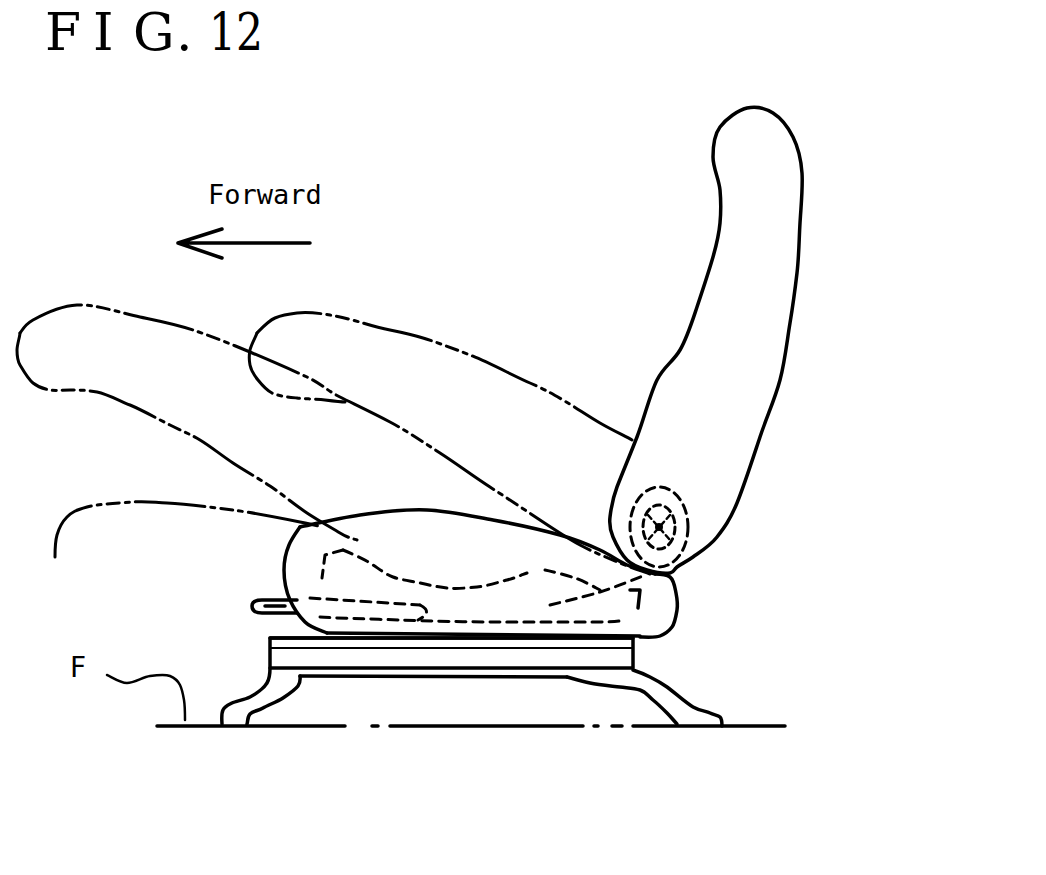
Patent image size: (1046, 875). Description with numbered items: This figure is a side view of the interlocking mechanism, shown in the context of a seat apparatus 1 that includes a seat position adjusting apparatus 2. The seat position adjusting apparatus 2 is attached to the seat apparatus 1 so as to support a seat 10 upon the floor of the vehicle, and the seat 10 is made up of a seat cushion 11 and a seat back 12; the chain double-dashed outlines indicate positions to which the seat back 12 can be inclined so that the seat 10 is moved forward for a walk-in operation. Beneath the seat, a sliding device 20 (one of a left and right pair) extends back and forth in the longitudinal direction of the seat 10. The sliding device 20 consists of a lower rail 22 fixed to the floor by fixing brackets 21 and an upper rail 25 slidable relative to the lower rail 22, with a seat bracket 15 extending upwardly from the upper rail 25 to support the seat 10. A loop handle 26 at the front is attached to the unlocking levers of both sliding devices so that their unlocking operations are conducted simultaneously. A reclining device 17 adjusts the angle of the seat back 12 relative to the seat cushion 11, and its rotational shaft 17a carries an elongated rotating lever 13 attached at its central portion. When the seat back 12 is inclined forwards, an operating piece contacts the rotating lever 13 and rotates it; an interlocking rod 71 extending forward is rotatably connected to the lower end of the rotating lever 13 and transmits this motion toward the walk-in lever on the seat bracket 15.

The seat apparatus 1 is at (828, 162).
The seat position adjusting apparatus 2 is at (740, 703).
The seat 10 is at (547, 297).
The seat cushion 11 is at (435, 535).
The seat back 12 is at (710, 263).
The rotating lever 13 is at (653, 497).
The seat bracket 15 is at (508, 607).
The reclining device 17 is at (687, 513).
The rotational shaft 17a is at (687, 543).
The sliding device 20 is at (300, 650).
The fixing bracket 21 is at (250, 714).
The lower rail 22 is at (443, 660).
The upper rail 25 is at (420, 643).
The loop handle 26 is at (258, 612).
The interlocking rod 71 is at (677, 583).